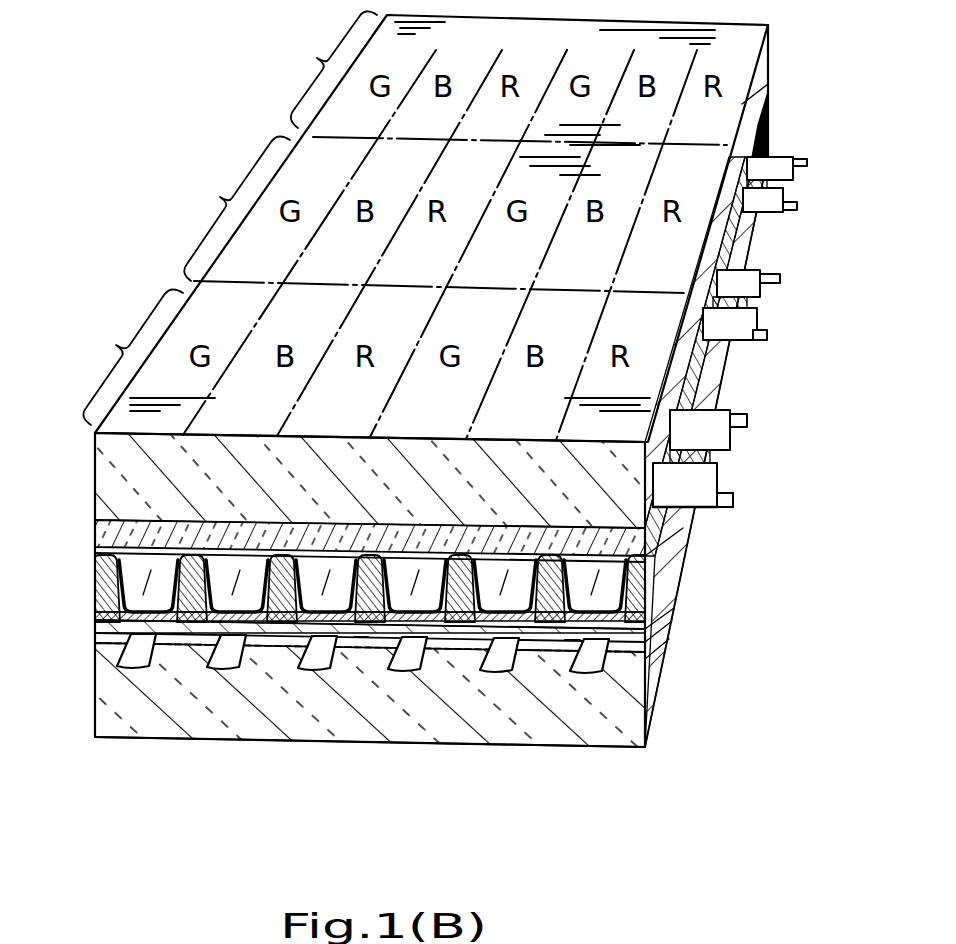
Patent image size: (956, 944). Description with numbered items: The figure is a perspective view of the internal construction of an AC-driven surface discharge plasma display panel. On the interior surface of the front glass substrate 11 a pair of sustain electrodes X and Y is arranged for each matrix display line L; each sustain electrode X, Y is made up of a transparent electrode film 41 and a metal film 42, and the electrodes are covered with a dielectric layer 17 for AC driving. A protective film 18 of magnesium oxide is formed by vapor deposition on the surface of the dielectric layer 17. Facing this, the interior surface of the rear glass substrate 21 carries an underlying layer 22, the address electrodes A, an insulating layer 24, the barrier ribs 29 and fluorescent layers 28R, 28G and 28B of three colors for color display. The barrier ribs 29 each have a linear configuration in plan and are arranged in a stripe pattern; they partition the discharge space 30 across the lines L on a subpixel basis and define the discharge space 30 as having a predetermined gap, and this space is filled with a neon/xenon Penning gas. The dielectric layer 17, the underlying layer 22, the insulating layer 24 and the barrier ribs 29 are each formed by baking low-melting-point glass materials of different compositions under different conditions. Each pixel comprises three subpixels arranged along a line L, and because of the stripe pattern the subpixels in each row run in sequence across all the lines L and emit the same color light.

The front glass substrate 11 is at (115, 486).
The dielectric layer 17 is at (655, 555).
The protective film 18 is at (650, 593).
The rear glass substrate 21 is at (112, 706).
The underlying layer 22 is at (655, 670).
The insulating layer 24 is at (655, 640).
The fluorescent layer 28B is at (524, 667).
The fluorescent layer 28G is at (449, 658).
The fluorescent layer 28R is at (340, 668).
The barrier ribs 29 is at (572, 641).
The discharge space 30 is at (122, 590).
The transparent electrode film 41 is at (700, 508).
The metal film 42 is at (732, 504).
The address electrodes A is at (595, 670).
The sustain electrode X is at (698, 480).
The sustain electrode Y is at (708, 433).
The matrix display line L is at (230, 218).